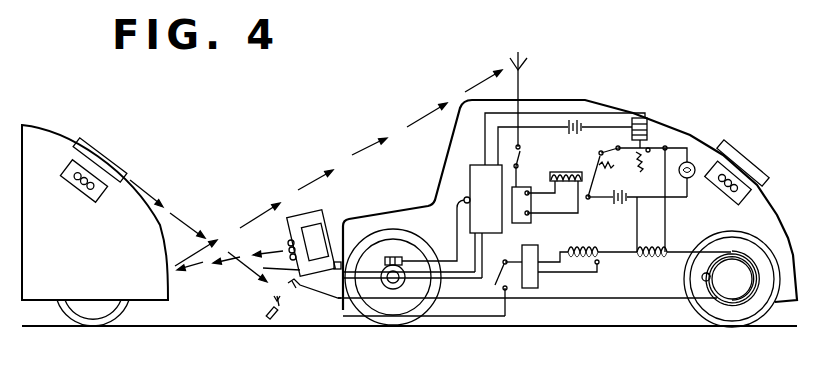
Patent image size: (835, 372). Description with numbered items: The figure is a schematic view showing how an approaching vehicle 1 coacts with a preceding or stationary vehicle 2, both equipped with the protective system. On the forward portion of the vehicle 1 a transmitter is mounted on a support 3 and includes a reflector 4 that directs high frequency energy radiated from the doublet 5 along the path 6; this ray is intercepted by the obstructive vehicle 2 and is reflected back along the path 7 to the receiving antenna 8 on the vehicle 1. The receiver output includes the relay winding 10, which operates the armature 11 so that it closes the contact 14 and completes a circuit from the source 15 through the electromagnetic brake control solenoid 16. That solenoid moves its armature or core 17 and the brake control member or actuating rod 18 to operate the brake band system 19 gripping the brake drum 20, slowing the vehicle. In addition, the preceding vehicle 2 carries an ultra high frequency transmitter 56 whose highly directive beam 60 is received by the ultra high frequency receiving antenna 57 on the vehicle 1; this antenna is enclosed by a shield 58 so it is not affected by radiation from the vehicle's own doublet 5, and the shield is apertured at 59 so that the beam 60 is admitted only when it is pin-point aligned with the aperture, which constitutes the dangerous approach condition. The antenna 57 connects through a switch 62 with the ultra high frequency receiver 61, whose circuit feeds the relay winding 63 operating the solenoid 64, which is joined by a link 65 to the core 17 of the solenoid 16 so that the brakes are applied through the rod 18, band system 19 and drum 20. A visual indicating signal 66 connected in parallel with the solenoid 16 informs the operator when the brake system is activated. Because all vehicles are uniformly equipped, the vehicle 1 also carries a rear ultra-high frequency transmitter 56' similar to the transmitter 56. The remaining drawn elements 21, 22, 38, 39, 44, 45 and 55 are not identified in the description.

The vehicle 1 is at (700, 99).
The preceding vehicle 2 is at (42, 147).
The support 3 is at (356, 218).
The reflector 4 is at (324, 213).
The doublet 5 is at (280, 211).
The path of ray 6 is at (197, 273).
The reflected path 7 is at (350, 157).
The receiving antenna 8 is at (530, 73).
The relay winding 10 is at (531, 155).
The armature 11 is at (608, 150).
The contact 14 is at (587, 155).
The source 15 is at (619, 207).
The electromagnetic brake control solenoid 16 is at (653, 240).
The armature 17 is at (668, 249).
The brake control member 18 is at (721, 250).
The brake band system 19 is at (710, 292).
The brake drum 20 is at (737, 287).
The axle cap 21 is at (402, 250).
The front wheel 22 is at (397, 287).
The relay coil 38 is at (648, 118).
The battery 39 is at (578, 115).
The spring 44 is at (645, 150).
The contact 45 is at (652, 150).
The control unit 55 is at (513, 152).
The high frequency transmitter 56 is at (176, 245).
The rear transmitter 56' is at (746, 170).
The ultra high frequency receiving antenna 57 is at (266, 304).
The shield 58 is at (290, 306).
The aperture 59 is at (288, 307).
The ultra high frequency beam of energy 60 is at (200, 223).
The ultra high frequency receiver 61 is at (533, 288).
The switch 62 is at (505, 291).
The relay winding 63 is at (583, 250).
The solenoid 64 is at (600, 265).
The link 65 is at (627, 254).
The visual indicating signal 66 is at (700, 160).